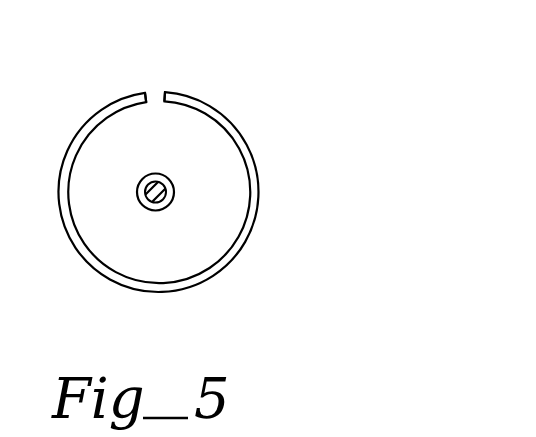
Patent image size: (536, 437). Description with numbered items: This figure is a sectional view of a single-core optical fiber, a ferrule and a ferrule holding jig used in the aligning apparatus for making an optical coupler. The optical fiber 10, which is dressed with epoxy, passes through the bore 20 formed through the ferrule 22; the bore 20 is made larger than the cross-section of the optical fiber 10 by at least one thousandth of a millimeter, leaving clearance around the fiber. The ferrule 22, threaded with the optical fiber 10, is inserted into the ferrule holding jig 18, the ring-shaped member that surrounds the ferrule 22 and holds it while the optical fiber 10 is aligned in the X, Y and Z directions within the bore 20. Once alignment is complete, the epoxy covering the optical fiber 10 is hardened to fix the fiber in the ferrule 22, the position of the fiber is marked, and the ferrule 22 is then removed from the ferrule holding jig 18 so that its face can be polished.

The optical fiber 10 is at (155, 202).
The ferrule holding jig 18 is at (202, 83).
The bore 20 is at (174, 188).
The ferrule 22 is at (210, 238).